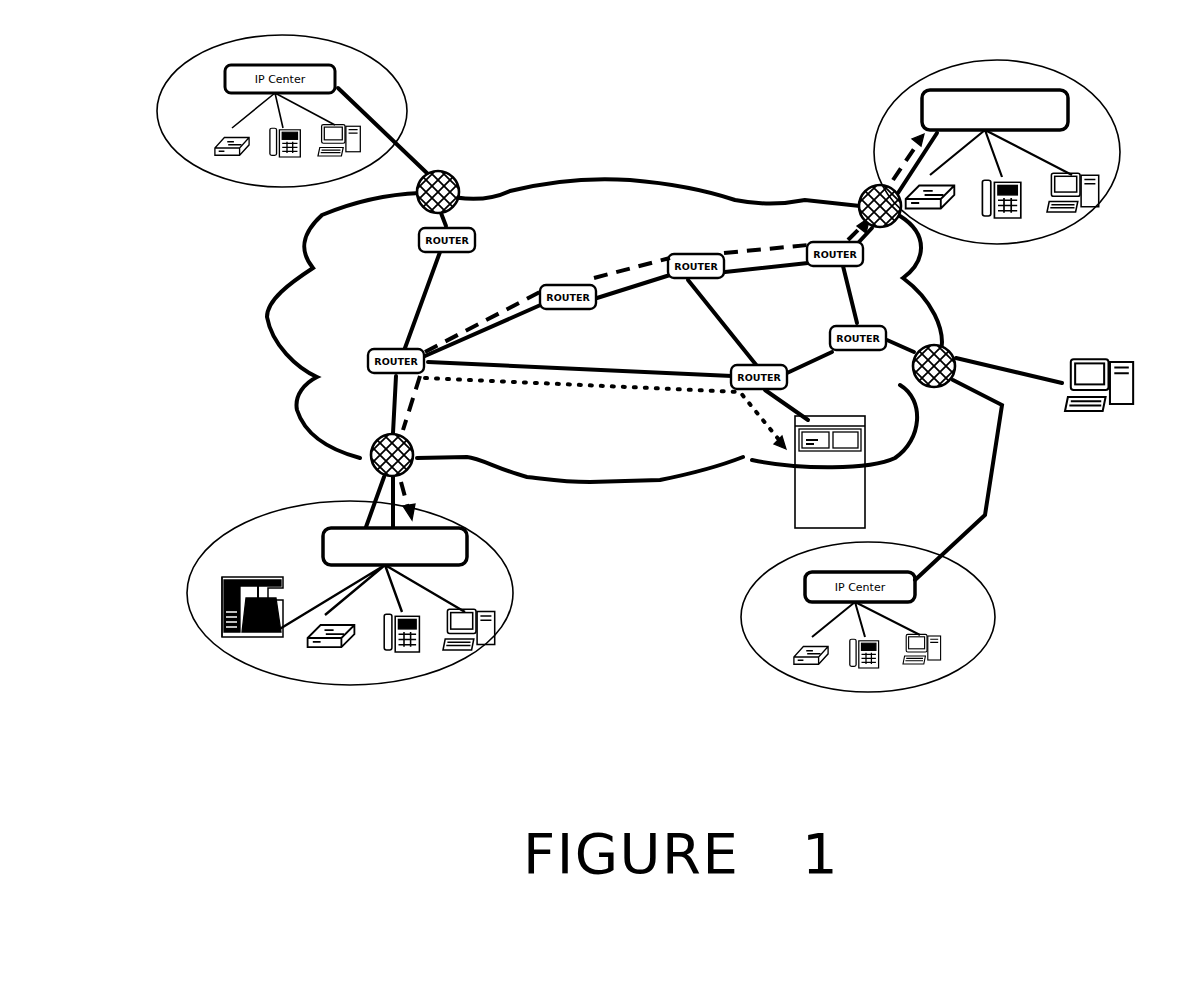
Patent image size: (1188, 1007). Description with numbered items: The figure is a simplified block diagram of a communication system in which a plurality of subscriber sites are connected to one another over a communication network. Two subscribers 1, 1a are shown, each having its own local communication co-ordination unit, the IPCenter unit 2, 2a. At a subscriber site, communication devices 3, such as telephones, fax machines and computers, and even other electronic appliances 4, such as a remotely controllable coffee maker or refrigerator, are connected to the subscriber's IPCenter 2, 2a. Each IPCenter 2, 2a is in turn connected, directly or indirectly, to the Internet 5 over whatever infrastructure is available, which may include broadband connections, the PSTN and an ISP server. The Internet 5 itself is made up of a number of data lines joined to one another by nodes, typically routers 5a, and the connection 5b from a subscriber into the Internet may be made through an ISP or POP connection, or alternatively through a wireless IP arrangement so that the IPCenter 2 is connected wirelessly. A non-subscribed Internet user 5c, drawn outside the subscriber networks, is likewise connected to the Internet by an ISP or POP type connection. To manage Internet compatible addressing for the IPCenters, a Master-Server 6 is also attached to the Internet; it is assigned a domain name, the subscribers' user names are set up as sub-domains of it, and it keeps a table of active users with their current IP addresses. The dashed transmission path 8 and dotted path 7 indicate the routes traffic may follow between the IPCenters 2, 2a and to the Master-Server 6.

The subscriber 1 is at (394, 642).
The subscriber 1a is at (1022, 185).
The IPCenter unit 2 is at (319, 541).
The IPCenter unit 2a is at (1074, 110).
The communication devices 3 is at (452, 652).
The electronic appliances 4 is at (256, 645).
The Internet 5 is at (268, 338).
The routers 5a is at (804, 245).
The connection 5b is at (369, 462).
The non-subscribed Internet user 5c is at (1106, 414).
The Master-Server 6 is at (868, 505).
The dotted path to master server 7 is at (610, 396).
The dashed transmission path 8 is at (502, 302).